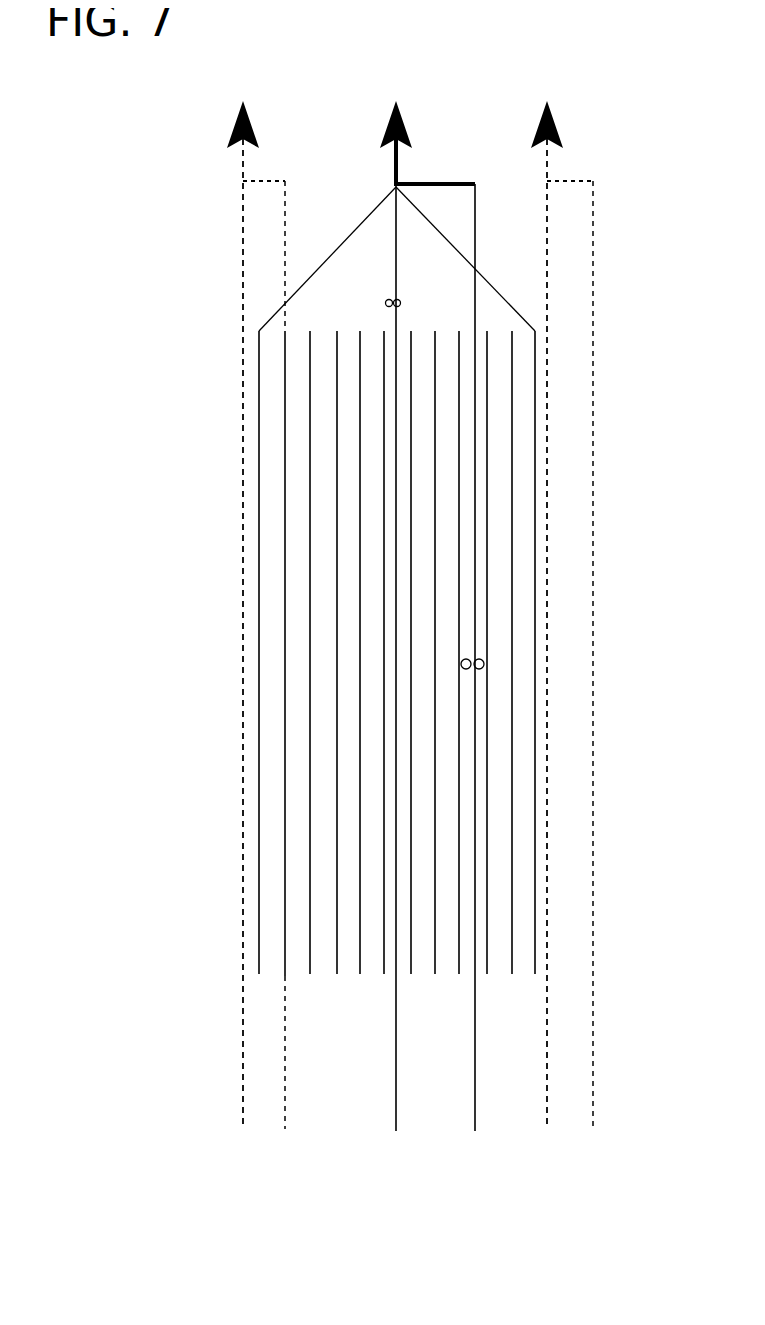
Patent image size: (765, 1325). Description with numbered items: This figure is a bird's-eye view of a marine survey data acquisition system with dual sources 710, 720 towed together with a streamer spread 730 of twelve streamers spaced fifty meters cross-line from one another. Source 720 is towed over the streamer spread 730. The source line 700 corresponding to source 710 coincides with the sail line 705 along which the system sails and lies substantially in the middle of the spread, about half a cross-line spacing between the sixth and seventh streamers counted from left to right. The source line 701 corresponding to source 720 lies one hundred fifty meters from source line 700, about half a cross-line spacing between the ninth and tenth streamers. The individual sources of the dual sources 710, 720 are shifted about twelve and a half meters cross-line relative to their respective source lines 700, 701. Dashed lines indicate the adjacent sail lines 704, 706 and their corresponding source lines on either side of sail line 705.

The source line 700 is at (396, 256).
The source line 701 is at (476, 248).
The sail line 704 is at (250, 122).
The sail line 705 is at (402, 122).
The sail line 706 is at (554, 122).
The source 710 is at (400, 302).
The source 720 is at (481, 668).
The streamer spread 730 is at (314, 585).